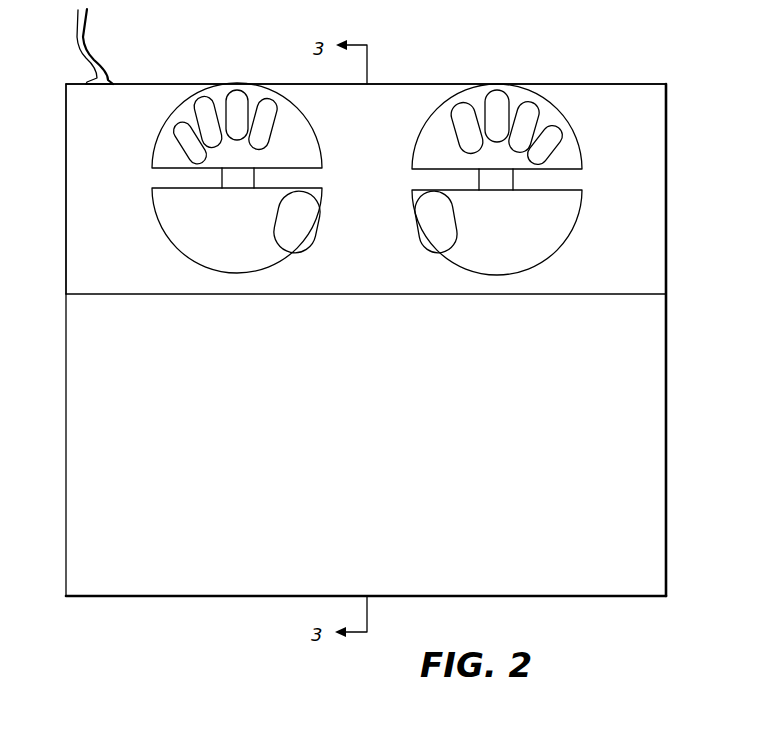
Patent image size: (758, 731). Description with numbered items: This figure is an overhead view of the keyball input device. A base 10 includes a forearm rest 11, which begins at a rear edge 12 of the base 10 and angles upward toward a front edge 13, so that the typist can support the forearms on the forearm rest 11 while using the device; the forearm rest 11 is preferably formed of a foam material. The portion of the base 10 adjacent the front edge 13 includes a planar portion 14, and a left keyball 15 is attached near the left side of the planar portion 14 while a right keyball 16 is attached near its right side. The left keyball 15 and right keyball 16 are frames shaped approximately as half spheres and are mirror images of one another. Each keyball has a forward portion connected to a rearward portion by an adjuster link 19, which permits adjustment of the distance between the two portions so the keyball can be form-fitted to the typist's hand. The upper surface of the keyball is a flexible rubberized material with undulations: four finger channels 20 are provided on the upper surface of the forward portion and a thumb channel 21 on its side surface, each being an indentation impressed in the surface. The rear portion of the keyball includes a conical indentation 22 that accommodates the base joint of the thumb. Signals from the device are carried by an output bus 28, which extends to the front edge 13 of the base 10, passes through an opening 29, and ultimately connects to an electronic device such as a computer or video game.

The base 10 is at (703, 318).
The forearm rest 11 is at (379, 432).
The rear edge 12 is at (578, 596).
The front edge 13 is at (573, 85).
The planar portion 14 is at (375, 241).
The left keyball 15 is at (319, 156).
The right keyball 16 is at (588, 120).
The adjuster link 19 is at (237, 180).
The finger channels 20 is at (185, 132).
The thumb channel 21 is at (302, 148).
The conical indentation 22 is at (300, 230).
The output bus 28 is at (79, 34).
The opening 29 is at (113, 84).